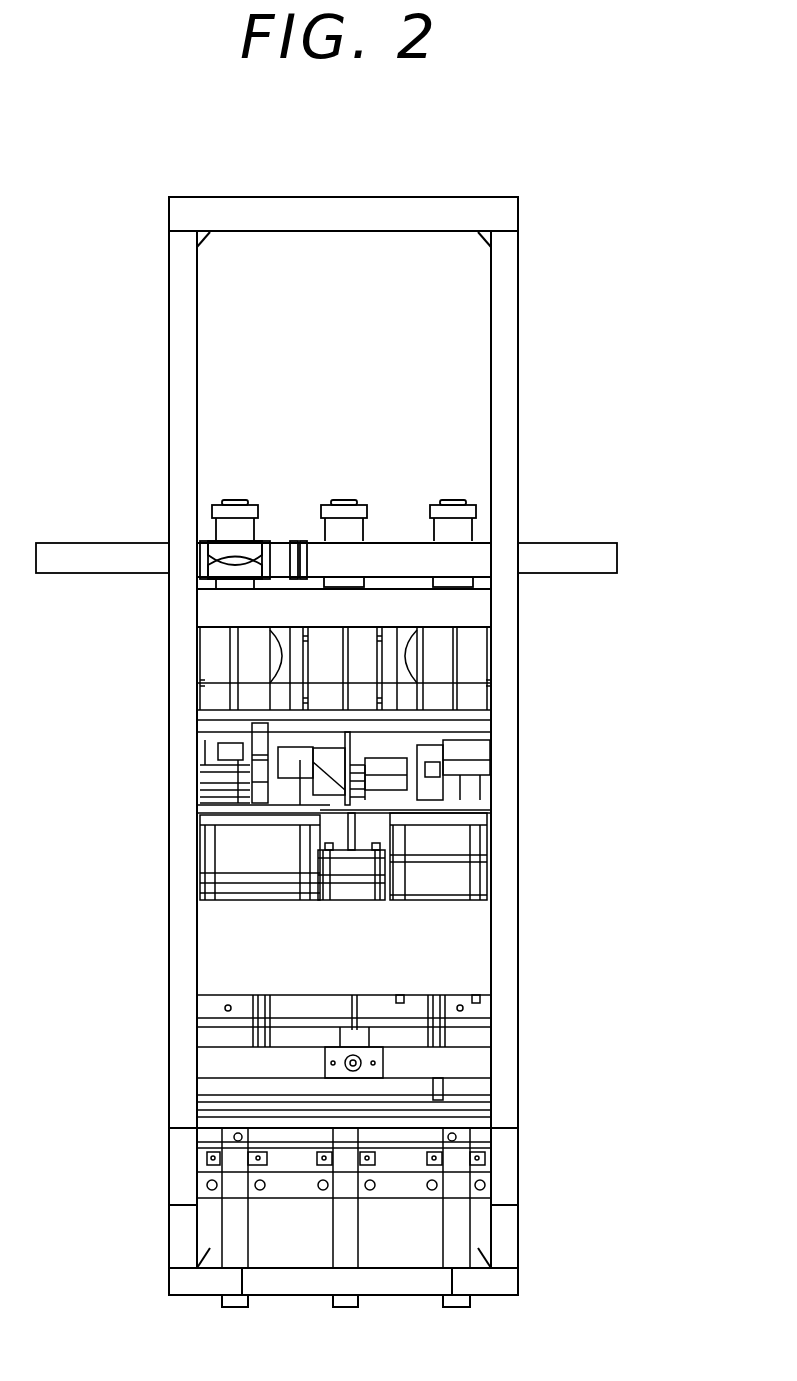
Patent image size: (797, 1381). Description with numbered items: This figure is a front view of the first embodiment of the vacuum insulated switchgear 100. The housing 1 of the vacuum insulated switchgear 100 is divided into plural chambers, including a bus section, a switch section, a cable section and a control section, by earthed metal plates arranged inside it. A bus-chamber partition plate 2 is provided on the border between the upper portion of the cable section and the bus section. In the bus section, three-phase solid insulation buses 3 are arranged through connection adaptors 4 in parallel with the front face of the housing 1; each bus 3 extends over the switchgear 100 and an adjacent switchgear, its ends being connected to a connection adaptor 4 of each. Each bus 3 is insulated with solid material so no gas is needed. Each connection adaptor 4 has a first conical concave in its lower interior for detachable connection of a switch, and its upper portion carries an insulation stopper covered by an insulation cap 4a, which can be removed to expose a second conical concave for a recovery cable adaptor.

The vacuum insulated switchgear 100 is at (344, 192).
The housing 1 is at (519, 268).
The bus-chamber partition plate 2 is at (457, 380).
The solid insulation bus 3 is at (618, 553).
The connection adaptor 4 is at (462, 533).
The insulation cap 4a is at (236, 505).